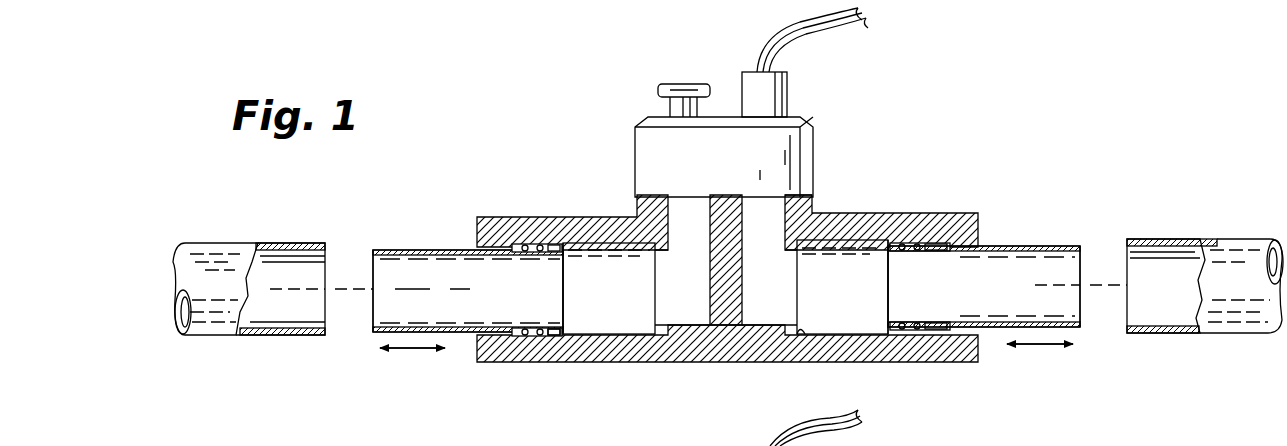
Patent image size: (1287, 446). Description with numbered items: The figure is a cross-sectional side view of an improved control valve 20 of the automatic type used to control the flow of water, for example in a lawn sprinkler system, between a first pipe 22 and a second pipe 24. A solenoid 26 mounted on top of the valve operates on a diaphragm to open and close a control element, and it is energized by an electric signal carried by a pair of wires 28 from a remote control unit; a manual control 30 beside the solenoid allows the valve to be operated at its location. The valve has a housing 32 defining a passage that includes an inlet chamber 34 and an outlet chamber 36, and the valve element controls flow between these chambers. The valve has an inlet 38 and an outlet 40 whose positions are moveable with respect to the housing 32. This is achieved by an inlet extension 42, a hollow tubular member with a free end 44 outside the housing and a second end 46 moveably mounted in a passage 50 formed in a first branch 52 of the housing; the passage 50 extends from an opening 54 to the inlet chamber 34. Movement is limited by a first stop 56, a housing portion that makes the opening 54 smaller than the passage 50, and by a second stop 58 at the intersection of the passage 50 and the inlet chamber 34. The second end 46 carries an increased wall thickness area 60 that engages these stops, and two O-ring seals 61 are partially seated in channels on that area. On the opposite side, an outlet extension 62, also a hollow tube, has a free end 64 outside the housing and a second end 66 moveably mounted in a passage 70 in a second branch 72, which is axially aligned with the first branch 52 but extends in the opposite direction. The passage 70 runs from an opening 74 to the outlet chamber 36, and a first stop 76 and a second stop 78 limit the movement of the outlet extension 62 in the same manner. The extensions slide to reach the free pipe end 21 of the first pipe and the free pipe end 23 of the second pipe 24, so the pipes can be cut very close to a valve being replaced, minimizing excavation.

The control valve 20 is at (888, 90).
The free pipe end 21 is at (332, 240).
The first pipe 22 is at (258, 240).
The free pipe end 23 is at (1127, 240).
The second pipe 24 is at (1200, 240).
The solenoid 26 is at (790, 80).
The pair of wires 28 is at (835, 30).
The manual control 30 is at (680, 84).
The housing 32 is at (910, 211).
The inlet chamber 34 is at (698, 260).
The outlet chamber 36 is at (769, 287).
The inlet 38 is at (390, 244).
The outlet 40 is at (1080, 240).
The inlet extension 42 is at (452, 333).
The free end 44 is at (372, 330).
The second end 46 is at (574, 323).
The passage 50 is at (609, 288).
The first branch 52 is at (553, 212).
The opening 54 is at (466, 243).
The first stop 56 is at (527, 246).
The second stop 58 is at (652, 336).
The increased wall thickness area 60 is at (525, 337).
The seals 61 is at (556, 337).
The outlet extension 62 is at (993, 331).
The free end 64 is at (1085, 322).
The second end 66 is at (870, 320).
The passage 70 is at (842, 287).
The second branch 72 is at (832, 204).
The opening 74 is at (985, 244).
The first stop 76 is at (950, 336).
The second stop 78 is at (802, 336).